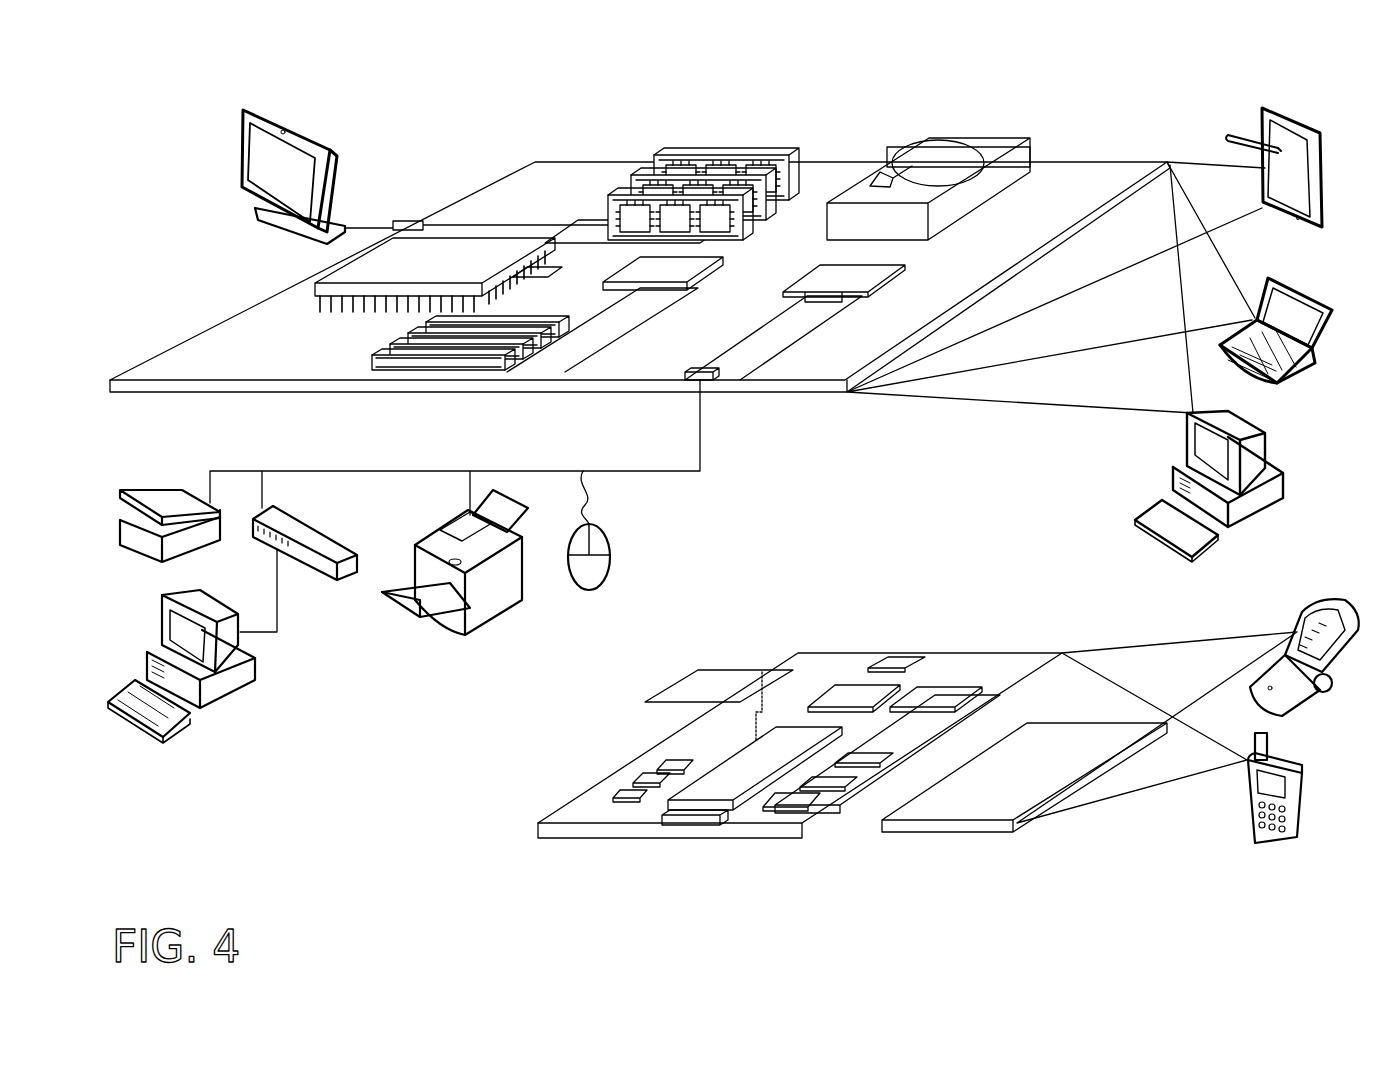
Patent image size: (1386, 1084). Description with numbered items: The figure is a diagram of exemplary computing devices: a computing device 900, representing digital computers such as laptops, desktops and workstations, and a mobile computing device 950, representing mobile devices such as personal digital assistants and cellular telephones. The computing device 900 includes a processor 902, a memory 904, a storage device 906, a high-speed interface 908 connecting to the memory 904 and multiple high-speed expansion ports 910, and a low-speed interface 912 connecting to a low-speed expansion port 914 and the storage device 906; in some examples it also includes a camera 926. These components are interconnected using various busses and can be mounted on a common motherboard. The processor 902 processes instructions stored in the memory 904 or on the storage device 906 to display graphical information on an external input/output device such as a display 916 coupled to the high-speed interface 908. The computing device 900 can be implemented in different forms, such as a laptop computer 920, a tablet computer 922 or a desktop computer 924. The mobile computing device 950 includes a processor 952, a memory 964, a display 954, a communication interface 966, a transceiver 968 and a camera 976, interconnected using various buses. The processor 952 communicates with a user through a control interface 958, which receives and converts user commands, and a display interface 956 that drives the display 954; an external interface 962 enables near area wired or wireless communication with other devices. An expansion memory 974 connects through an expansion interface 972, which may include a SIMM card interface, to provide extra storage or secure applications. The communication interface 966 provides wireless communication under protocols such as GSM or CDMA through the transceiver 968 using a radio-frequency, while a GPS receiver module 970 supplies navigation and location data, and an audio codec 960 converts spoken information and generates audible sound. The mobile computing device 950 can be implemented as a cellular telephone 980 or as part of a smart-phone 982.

The computing device 900 is at (455, 136).
The processor 902 is at (315, 288).
The memory 904 is at (672, 157).
The storage device 906 is at (915, 146).
The high-speed interface 908 is at (637, 272).
The high-speed expansion ports 910 is at (393, 347).
The low-speed interface 912 is at (825, 273).
The low-speed expansion port 914 is at (703, 383).
The display 916 is at (245, 111).
The laptop computer 920 is at (1287, 380).
The tablet computer 922 is at (1262, 121).
The desktop computer 924 is at (1178, 480).
The camera 926 is at (1280, 132).
The mobile computing device 950 is at (513, 830).
The processor 952 is at (727, 792).
The display 954 is at (980, 810).
The display interface 956 is at (800, 797).
The control interface 958 is at (835, 776).
The audio codec 960 is at (863, 754).
The external interface 962 is at (688, 826).
The memory 964 is at (655, 785).
The communication interface 966 is at (855, 692).
The transceiver 968 is at (938, 692).
The GPS receiver module 970 is at (910, 656).
The expansion interface 972 is at (780, 668).
The expansion memory 974 is at (698, 671).
The camera 976 is at (1272, 768).
The cellular telephone 980 is at (1305, 610).
The smart-phone 982 is at (1250, 795).